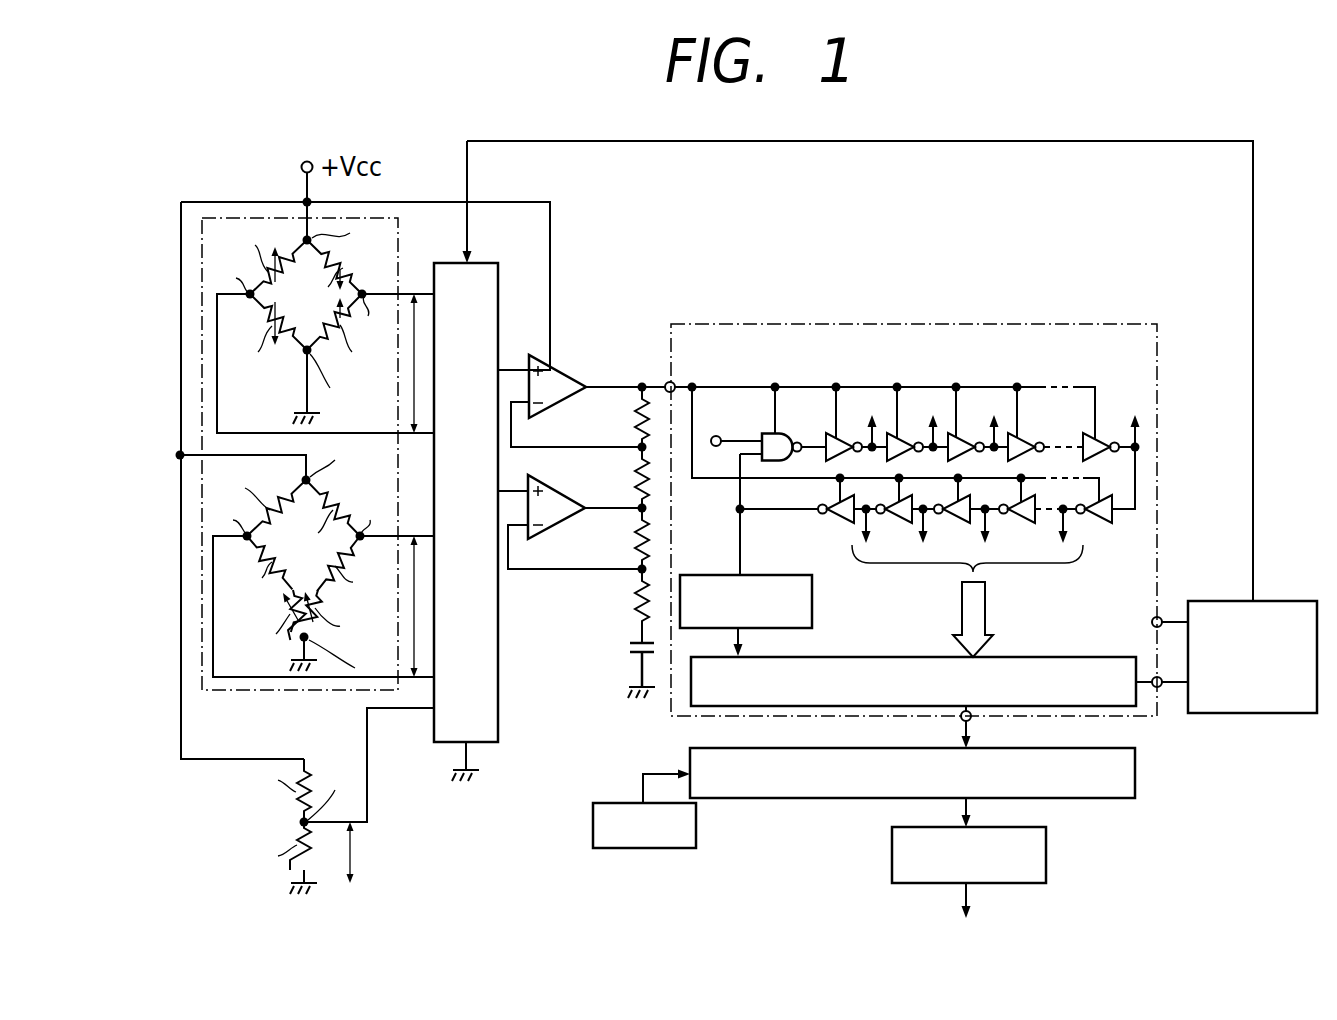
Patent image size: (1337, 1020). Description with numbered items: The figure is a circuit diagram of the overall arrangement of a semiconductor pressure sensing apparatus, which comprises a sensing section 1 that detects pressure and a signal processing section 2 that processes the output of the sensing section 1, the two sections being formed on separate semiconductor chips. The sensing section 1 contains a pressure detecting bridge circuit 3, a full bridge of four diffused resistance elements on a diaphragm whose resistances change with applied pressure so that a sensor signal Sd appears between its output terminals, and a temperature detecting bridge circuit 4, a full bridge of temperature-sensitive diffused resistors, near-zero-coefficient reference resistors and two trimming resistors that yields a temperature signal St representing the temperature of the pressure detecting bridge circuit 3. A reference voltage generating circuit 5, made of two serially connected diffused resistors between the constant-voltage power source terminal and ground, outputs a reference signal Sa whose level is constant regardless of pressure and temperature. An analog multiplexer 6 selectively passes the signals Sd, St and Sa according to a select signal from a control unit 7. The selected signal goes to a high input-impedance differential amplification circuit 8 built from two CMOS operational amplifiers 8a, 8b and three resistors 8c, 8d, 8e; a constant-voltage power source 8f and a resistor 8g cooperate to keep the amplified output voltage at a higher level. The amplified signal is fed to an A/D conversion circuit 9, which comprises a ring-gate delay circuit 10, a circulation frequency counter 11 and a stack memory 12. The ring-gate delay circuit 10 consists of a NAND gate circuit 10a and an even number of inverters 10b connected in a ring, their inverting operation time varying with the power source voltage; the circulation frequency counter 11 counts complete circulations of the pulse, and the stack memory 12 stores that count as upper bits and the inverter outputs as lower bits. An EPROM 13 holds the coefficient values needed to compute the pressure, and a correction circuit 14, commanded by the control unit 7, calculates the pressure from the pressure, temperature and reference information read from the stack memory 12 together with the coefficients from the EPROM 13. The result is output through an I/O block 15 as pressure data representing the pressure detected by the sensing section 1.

The sensing section 1 is at (266, 700).
The signal processing section 2 is at (912, 262).
The pressure detecting bridge circuit 3 is at (398, 243).
The temperature detecting bridge circuit 4 is at (397, 463).
The reference voltage generating circuit 5 is at (268, 812).
The analog multiplexer 6 is at (485, 262).
The control unit 7 is at (1268, 714).
The differential amplification circuit 8 is at (577, 360).
The CMOS operational amplifier 8a is at (552, 403).
The CMOS operational amplifier 8b is at (552, 525).
The resistor 8c is at (636, 416).
The resistor 8d is at (636, 478).
The resistor 8e is at (636, 538).
The constant-voltage power source 8f is at (630, 648).
The resistor 8g is at (636, 596).
The A/D conversion circuit 9 is at (1008, 305).
The ring-gate delay circuit 10 is at (869, 385).
The NAND gate circuit 10a is at (764, 434).
The inverter 10b is at (826, 434).
The circulation frequency counter 11 is at (812, 600).
The stack memory 12 is at (1069, 656).
The EPROM 13 is at (696, 826).
The correction circuit 14 is at (1118, 799).
The I/O block 15 is at (1046, 866).